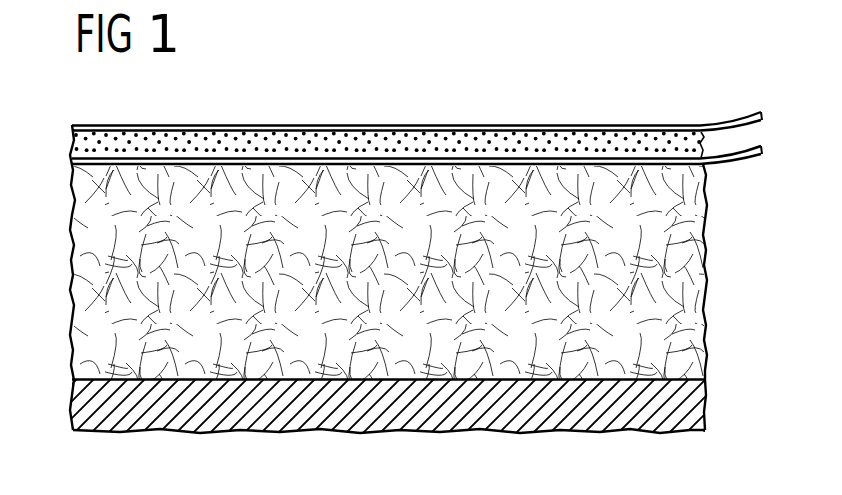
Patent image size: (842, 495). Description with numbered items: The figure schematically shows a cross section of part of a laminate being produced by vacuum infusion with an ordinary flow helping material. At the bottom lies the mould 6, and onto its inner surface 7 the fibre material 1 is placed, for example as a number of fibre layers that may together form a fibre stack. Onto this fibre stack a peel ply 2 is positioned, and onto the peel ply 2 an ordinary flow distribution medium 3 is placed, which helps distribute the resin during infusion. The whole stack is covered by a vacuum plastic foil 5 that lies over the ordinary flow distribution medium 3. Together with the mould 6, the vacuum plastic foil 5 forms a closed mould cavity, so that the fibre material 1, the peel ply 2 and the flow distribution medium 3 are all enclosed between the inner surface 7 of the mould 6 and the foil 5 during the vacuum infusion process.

The fibre material 1 is at (694, 265).
The peel ply 2 is at (765, 152).
The ordinary flow distribution medium 3 is at (612, 140).
The vacuum plastic foil 5 is at (765, 118).
The mould 6 is at (694, 413).
The inner surface 7 is at (688, 374).